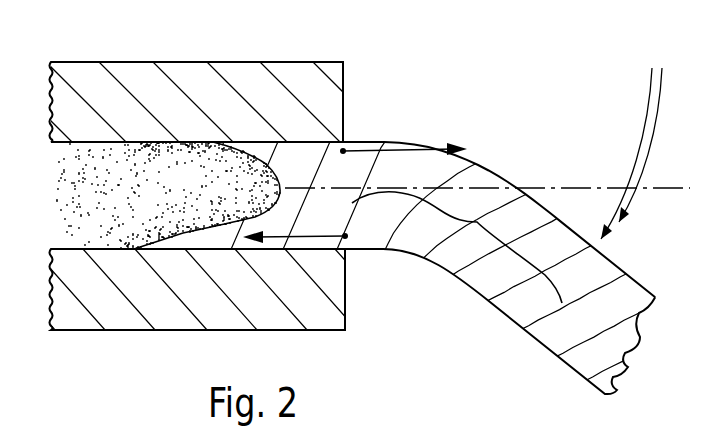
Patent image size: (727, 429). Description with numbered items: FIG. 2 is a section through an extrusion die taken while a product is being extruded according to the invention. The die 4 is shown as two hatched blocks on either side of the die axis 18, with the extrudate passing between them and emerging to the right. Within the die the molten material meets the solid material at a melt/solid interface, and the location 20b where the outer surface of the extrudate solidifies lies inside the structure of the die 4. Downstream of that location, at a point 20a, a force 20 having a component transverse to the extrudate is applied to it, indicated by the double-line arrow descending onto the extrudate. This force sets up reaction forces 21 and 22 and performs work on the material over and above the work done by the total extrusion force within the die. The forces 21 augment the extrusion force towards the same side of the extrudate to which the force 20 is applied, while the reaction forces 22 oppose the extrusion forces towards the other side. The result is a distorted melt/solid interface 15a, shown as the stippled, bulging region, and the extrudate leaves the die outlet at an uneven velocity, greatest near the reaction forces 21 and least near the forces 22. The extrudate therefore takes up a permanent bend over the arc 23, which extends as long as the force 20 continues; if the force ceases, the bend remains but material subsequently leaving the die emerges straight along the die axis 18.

The die 4 is at (158, 58).
The distorted melt/solid interface 15a is at (247, 163).
The die axis 18 is at (670, 186).
The force 20 is at (647, 107).
The point of application of force 20a is at (598, 252).
The location where outer surface of extrudate solidifies 20b is at (227, 143).
The reaction forces 21 is at (345, 150).
The reaction forces 22 is at (318, 238).
The arc 23 is at (480, 218).